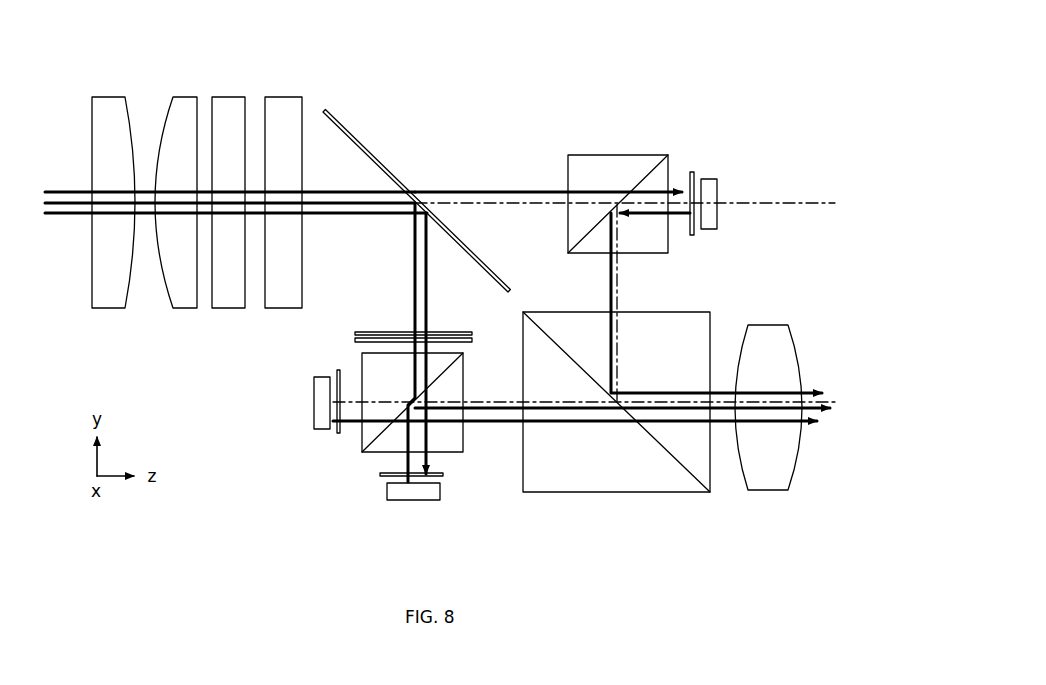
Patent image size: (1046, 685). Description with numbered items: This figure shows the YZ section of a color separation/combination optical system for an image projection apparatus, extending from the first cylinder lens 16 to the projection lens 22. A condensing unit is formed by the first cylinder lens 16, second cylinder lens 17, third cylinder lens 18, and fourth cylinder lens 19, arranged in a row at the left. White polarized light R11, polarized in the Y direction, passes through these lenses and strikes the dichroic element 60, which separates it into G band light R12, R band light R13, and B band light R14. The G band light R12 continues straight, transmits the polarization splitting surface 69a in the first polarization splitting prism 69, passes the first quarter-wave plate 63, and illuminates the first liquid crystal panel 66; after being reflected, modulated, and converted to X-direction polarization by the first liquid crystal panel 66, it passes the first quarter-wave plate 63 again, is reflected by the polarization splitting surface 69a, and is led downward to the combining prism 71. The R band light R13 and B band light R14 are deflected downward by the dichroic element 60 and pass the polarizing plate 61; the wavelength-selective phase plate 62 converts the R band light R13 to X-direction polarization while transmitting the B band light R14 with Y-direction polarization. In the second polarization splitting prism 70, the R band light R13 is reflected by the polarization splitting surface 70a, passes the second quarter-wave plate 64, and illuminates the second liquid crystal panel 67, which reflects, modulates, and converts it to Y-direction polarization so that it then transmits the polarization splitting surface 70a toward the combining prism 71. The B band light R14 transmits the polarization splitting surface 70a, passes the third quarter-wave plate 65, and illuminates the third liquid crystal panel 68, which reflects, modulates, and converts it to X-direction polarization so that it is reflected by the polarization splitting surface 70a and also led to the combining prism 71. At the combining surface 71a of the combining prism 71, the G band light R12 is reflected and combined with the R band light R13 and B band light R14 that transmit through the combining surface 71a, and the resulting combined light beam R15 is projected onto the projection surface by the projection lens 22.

The first cylinder lens 16 is at (107, 97).
The second cylinder lens 17 is at (185, 97).
The third cylinder lens 18 is at (228, 97).
The fourth cylinder lens 19 is at (285, 97).
The projection lens 22 is at (797, 342).
The dichroic element 60 is at (365, 153).
The polarizing plate 61 is at (359, 332).
The wavelength-selective phase plate 62 is at (355, 341).
The first quarter-wave plate 63 is at (691, 172).
The second quarter-wave plate 64 is at (338, 436).
The third quarter-wave plate 65 is at (445, 476).
The first liquid crystal panel 66 is at (710, 179).
The second liquid crystal panel 67 is at (313, 407).
The third liquid crystal panel 68 is at (423, 500).
The first polarization splitting prism 69 is at (600, 155).
The polarization splitting surface 69a is at (647, 175).
The second polarization splitting prism 70 is at (463, 445).
The polarization splitting surface 70a is at (440, 375).
The combining prism 71 is at (585, 492).
The combining surface 71a is at (687, 471).
The white polarized light R11 is at (65, 214).
The G band light R12 is at (455, 190).
The R band light R13 is at (412, 255).
The B band light R14 is at (429, 290).
The combined light beam R15 is at (777, 415).